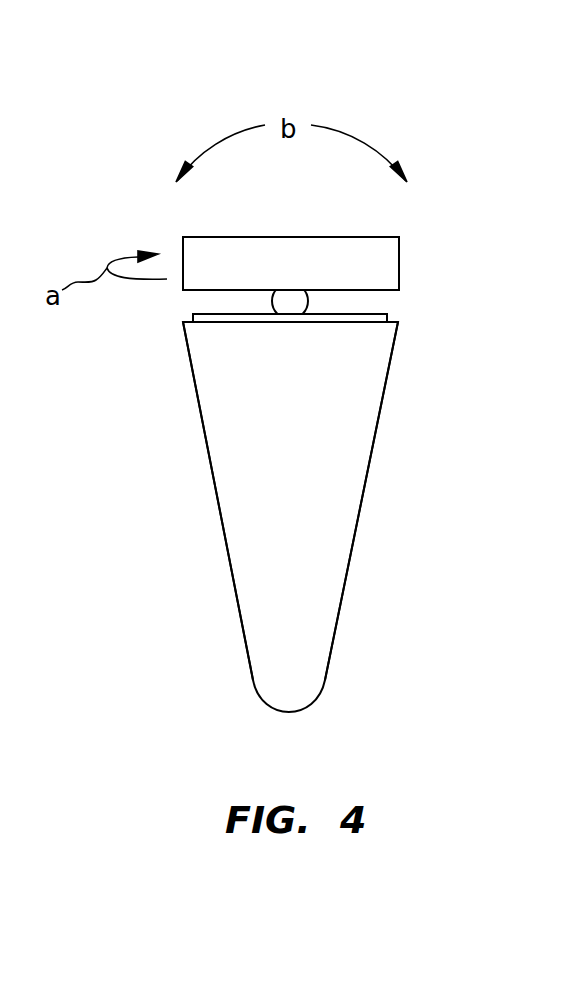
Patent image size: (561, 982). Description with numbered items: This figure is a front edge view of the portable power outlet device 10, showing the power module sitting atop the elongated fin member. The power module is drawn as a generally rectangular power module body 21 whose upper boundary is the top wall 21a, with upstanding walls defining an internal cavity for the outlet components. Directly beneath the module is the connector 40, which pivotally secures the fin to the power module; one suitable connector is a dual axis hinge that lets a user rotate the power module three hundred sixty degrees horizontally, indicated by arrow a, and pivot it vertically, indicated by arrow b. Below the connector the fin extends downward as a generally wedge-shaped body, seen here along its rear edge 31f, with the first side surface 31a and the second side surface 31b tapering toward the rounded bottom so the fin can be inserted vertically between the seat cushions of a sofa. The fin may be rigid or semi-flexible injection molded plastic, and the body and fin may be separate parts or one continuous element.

The portable power outlet device 10 is at (103, 108).
The power module body 21 is at (303, 274).
The top wall 21a is at (320, 237).
The connector 40 is at (300, 307).
The rear edge 31f is at (307, 469).
The first side surface 31a is at (218, 510).
The second side surface 31b is at (362, 517).